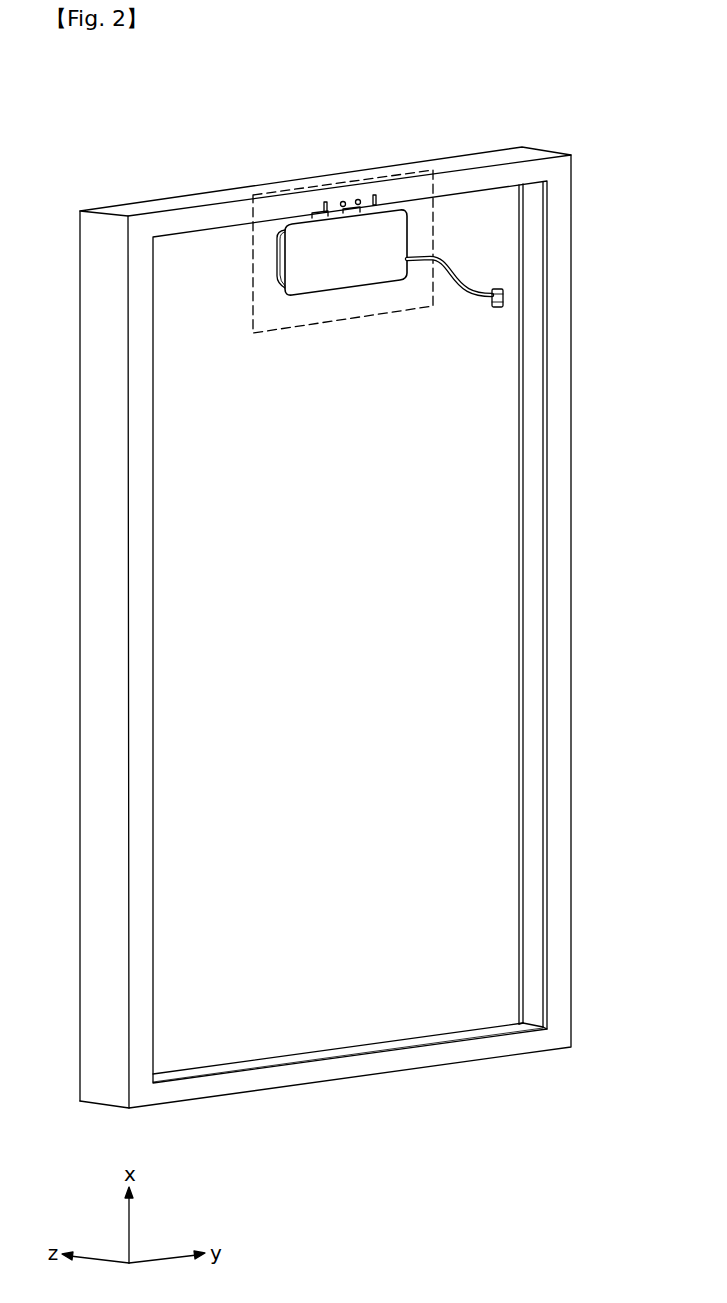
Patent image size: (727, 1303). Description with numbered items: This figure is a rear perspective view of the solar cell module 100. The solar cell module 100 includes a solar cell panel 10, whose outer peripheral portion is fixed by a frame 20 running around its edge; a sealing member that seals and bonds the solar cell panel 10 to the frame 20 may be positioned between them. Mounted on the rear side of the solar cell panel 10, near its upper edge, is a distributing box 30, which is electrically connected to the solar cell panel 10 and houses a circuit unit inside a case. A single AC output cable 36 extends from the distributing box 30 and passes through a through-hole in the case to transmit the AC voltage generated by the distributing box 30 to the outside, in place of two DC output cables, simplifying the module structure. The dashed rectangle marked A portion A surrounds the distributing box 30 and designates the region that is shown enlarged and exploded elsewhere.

The solar cell module 100 is at (113, 117).
The frame 20 is at (446, 148).
The solar cell panel 10 is at (322, 588).
The distributing box 30 is at (331, 273).
The AC output cable 36 is at (503, 298).
The A portion A is at (341, 186).